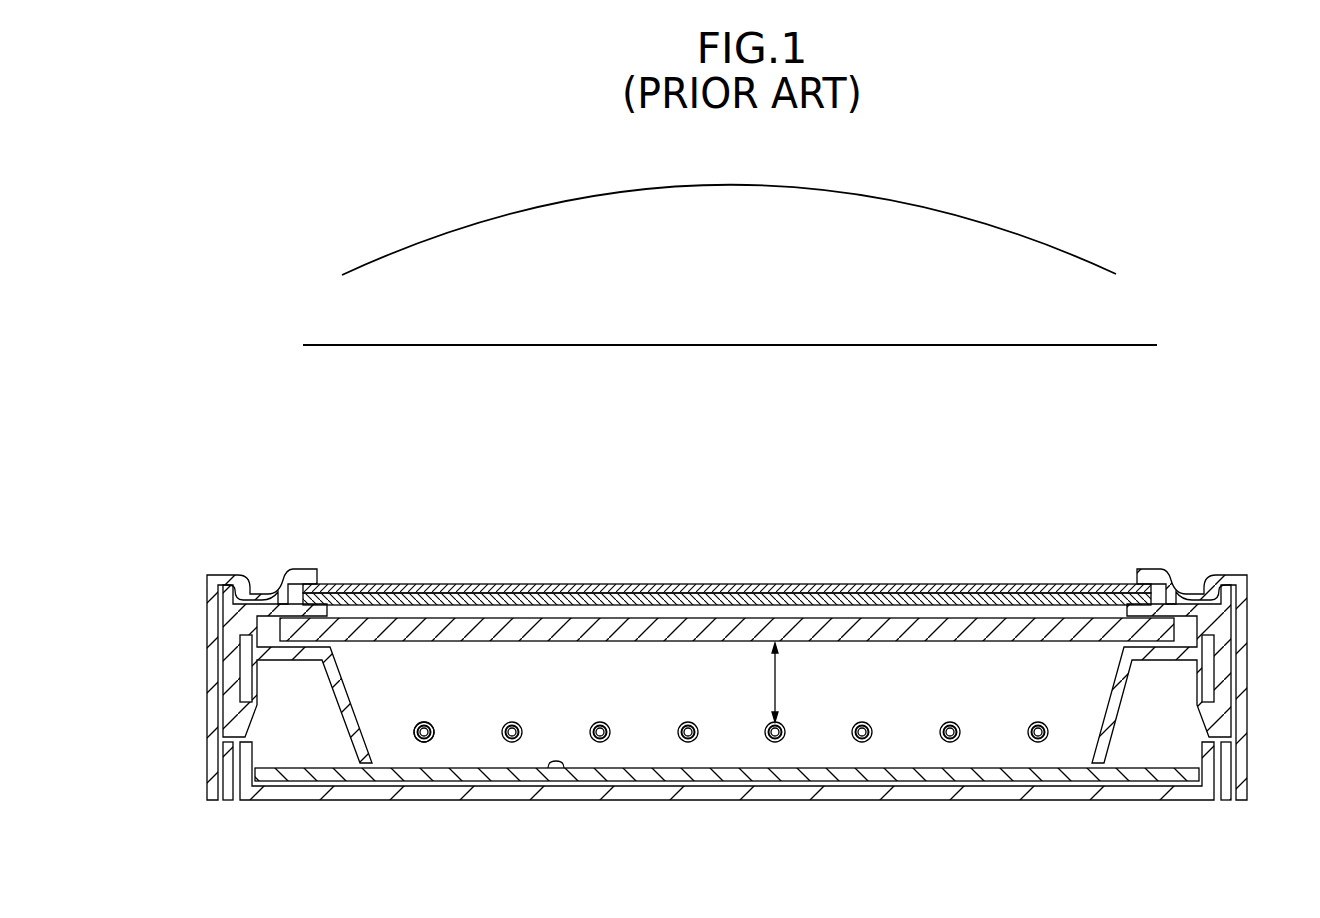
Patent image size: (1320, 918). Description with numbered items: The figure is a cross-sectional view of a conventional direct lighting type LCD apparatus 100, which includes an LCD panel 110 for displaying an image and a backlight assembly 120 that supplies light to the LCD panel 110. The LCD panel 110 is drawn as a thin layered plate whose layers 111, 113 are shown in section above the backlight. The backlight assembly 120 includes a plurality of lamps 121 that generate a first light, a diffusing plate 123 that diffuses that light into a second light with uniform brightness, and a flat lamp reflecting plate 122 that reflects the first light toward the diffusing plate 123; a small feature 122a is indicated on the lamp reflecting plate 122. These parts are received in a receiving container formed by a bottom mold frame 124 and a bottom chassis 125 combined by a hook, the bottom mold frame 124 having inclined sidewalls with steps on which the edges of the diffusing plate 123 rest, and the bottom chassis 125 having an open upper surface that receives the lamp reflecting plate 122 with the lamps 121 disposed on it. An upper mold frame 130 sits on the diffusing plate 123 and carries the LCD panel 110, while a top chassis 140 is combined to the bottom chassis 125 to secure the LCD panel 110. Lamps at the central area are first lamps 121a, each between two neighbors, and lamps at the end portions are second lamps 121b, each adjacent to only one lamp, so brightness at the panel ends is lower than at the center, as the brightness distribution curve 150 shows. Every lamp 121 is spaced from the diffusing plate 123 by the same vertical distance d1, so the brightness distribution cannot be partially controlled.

The direct lighting type LCD apparatus 100 is at (808, 440).
The LCD panel 110 is at (727, 538).
The display panel 111 is at (666, 506).
The optical sheet 113 is at (683, 585).
The backlight assembly 120 is at (727, 766).
The lamps 121 is at (732, 774).
The first lamps 121a is at (685, 721).
The second lamps 121b is at (420, 744).
The lamp reflecting plate 122 is at (727, 816).
The reflector plate protrusion 122a is at (553, 772).
The diffusing plate 123 is at (817, 630).
The bottom mold frame 124 is at (1213, 625).
The bottom chassis 125 is at (802, 877).
The upper mold frame 130 is at (757, 674).
The top chassis 140 is at (1228, 576).
The brightness distribution curve 150 is at (1090, 256).
The distance d1 is at (762, 682).